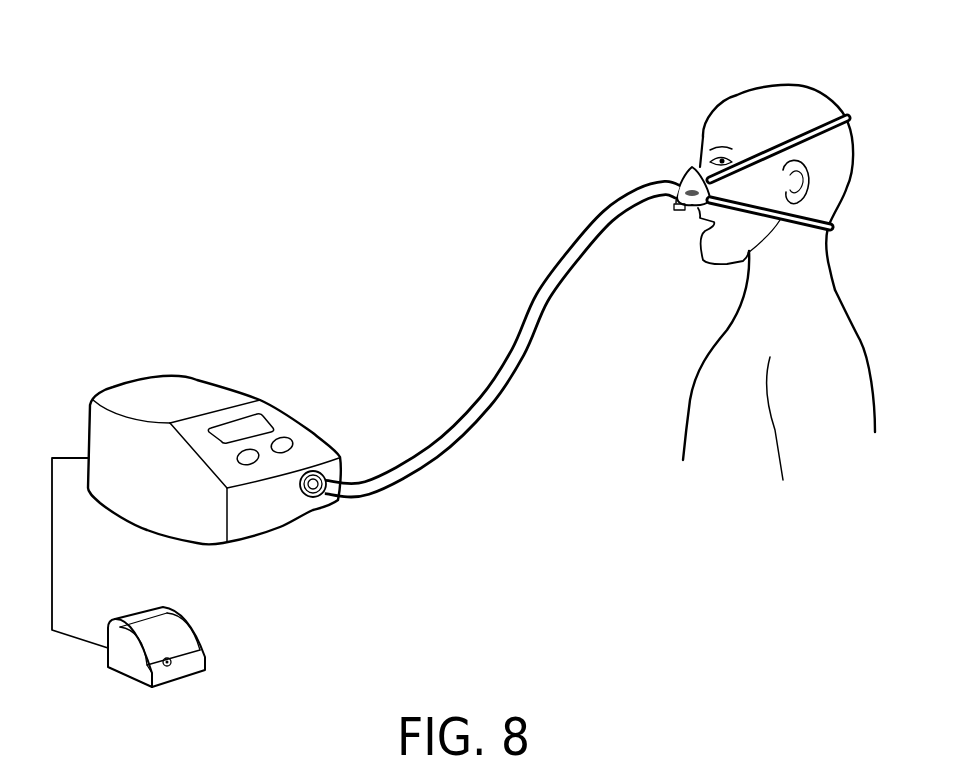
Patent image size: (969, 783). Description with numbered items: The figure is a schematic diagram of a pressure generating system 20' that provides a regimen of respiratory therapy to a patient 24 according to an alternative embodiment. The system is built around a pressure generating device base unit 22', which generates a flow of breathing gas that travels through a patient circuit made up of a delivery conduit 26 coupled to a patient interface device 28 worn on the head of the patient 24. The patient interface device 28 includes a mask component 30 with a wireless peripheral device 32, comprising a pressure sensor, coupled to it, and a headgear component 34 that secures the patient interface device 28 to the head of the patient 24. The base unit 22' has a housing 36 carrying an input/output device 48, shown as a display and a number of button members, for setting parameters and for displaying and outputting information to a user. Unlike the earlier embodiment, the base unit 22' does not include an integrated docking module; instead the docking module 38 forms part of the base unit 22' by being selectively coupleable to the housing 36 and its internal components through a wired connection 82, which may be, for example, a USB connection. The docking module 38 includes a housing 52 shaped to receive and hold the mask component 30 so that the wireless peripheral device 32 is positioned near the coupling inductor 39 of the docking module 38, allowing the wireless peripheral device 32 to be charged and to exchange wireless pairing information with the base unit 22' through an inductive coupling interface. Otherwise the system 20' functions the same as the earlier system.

The pressure generating system 20' is at (280, 132).
The pressure generating device base unit 22' is at (214, 431).
The patient 24 is at (738, 98).
The delivery conduit 26 is at (512, 347).
The patient interface device 28 is at (674, 151).
The mask component 30 is at (680, 201).
The wireless peripheral device 32 is at (686, 211).
The headgear component 34 is at (793, 142).
The housing 36 is at (100, 435).
The docking module 38 is at (187, 613).
The coupling inductor 39 is at (190, 653).
The input/output device 48 is at (221, 455).
The housing 52 is at (132, 670).
The wired connection 82 is at (65, 637).